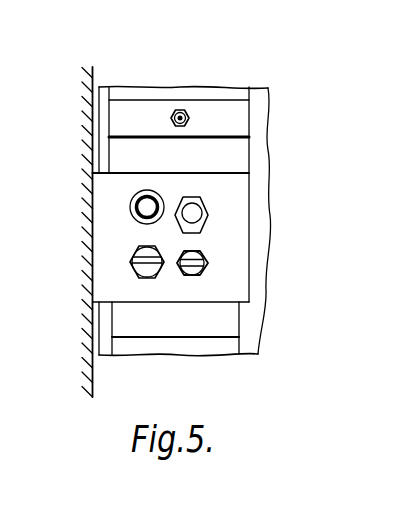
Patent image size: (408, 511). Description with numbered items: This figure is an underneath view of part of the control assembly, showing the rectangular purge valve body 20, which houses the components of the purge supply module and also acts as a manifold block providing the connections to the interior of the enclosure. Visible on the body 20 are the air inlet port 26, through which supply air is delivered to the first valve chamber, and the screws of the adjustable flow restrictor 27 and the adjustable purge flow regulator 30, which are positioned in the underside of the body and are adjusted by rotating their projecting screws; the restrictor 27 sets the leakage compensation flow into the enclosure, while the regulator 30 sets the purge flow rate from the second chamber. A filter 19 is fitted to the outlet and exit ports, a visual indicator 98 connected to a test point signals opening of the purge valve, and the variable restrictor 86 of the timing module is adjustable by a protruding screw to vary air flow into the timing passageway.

The body 20 is at (252, 178).
The variable restrictor 86 is at (184, 114).
The filter 19 is at (94, 207).
The visual indicator 98 is at (130, 207).
The air inlet port 26 is at (200, 213).
The adjustable flow restrictor 27 is at (208, 263).
The adjustable purge flow regulator 30 is at (133, 268).